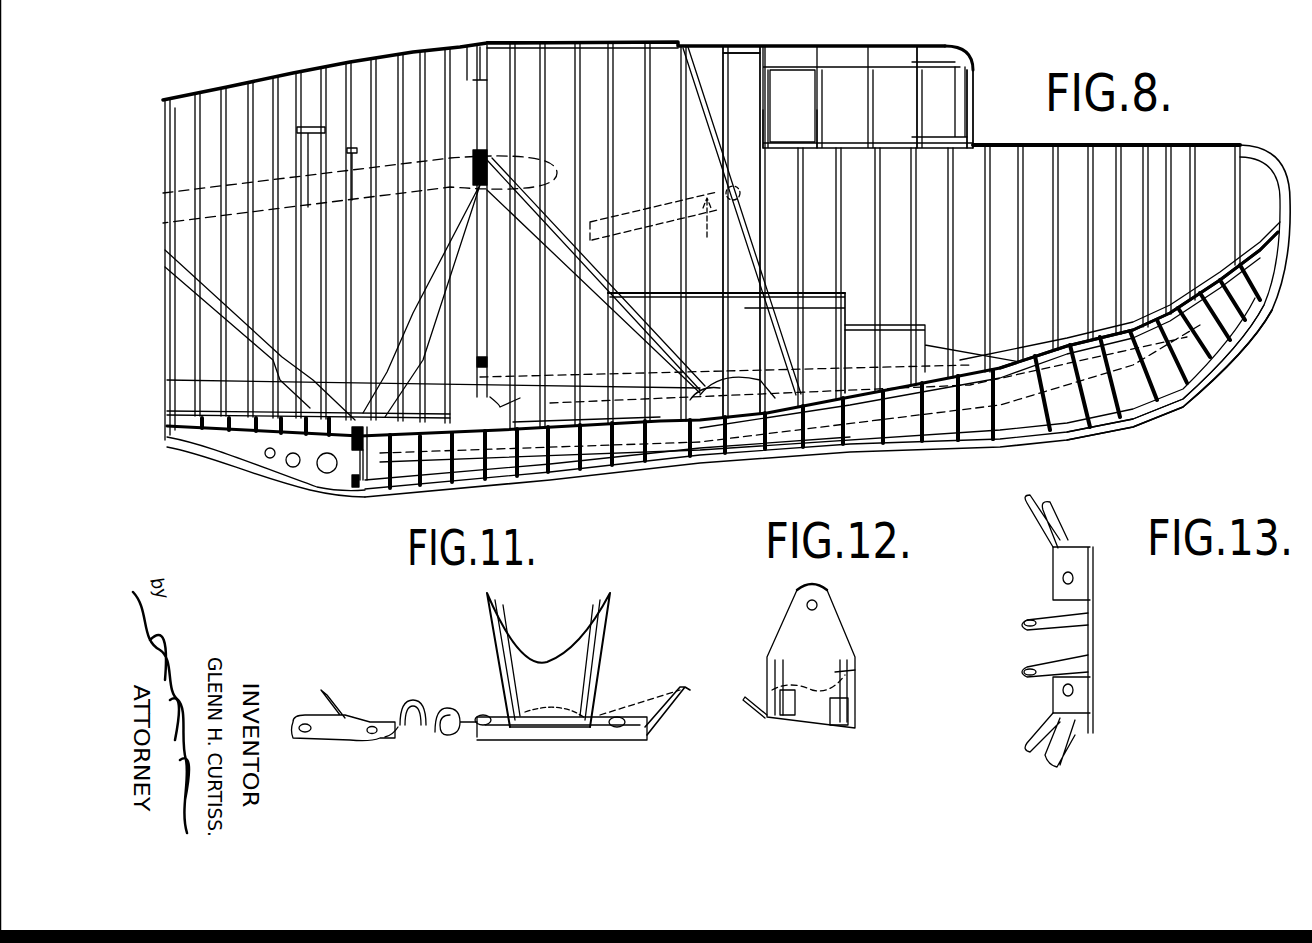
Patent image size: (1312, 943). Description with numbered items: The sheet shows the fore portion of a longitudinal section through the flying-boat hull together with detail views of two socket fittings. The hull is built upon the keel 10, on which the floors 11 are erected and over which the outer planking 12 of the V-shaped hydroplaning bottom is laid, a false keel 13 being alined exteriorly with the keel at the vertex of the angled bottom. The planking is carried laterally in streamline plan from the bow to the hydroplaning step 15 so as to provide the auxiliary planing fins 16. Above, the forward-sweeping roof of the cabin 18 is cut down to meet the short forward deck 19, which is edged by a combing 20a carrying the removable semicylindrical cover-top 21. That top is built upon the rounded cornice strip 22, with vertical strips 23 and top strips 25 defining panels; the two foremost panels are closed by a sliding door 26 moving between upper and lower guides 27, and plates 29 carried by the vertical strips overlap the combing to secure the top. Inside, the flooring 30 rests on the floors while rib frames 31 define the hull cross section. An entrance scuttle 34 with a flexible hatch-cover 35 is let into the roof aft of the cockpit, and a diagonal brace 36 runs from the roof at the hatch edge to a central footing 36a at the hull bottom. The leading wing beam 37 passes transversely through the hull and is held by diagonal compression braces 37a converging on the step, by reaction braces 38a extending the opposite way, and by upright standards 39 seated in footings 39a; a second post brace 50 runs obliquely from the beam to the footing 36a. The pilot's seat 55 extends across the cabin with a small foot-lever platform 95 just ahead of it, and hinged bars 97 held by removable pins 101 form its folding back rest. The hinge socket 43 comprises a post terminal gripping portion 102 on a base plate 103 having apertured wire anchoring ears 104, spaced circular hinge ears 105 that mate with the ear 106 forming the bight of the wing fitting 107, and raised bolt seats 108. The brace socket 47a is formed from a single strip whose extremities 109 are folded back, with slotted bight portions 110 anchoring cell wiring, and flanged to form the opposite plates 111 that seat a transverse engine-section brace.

In FIG. 8, the keel 10 is at (1100, 426).
In FIG. 8, the floors 11 is at (995, 410).
In FIG. 8, the outer planking 12 is at (1150, 420).
In FIG. 8, the false keel 13 is at (1110, 432).
In FIG. 8, the hydroplaning step 15 is at (360, 460).
In FIG. 8, the auxiliary planing fins 16 is at (720, 372).
In FIG. 8, the cabin 18 is at (740, 232).
In FIG. 8, the forward deck 19 is at (1185, 145).
In FIG. 8, the combing 20a is at (823, 160).
In FIG. 8, the removable cover-top 21 is at (792, 106).
In FIG. 8, the cornice strip 22 is at (968, 52).
In FIG. 8, the vertical strips 23 is at (917, 86).
In FIG. 8, the top strips 25 is at (818, 47).
In FIG. 8, the sliding door 26 is at (975, 82).
In FIG. 8, the upper and lower guides 27 is at (912, 135).
In FIG. 8, the plates 29 is at (815, 133).
In FIG. 8, the flooring 30 is at (1078, 343).
In FIG. 8, the rib frames 31 is at (1090, 220).
In FIG. 8, the entrance scuttle 34 is at (586, 48).
In FIG. 8, the hatch-cover 35 is at (625, 44).
In FIG. 8, the brace 36 is at (705, 133).
In FIG. 8, the central footing 36a is at (752, 440).
In FIG. 8, the wing beam 37 is at (470, 158).
In FIG. 8, the diagonal compression braces 37a is at (190, 290).
In FIG. 8, the reaction braces 38a is at (548, 255).
In FIG. 8, the upright standards 39 is at (484, 300).
In FIG. 8, the footings 39a is at (500, 405).
In FIG. 8, the second post brace 50 is at (610, 290).
In FIG. 8, the pilot's seat 55 is at (785, 293).
In FIG. 8, the platform 95 is at (955, 350).
In FIG. 8, the bars 97 is at (640, 215).
In FIG. 8, the removable pins 101 is at (705, 233).
In FIG. 11, the post terminal gripping portion 102 is at (512, 642).
In FIG. 12, the post terminal gripping portion 102 is at (835, 628).
In FIG. 11, the socket fitting 43 is at (603, 655).
In FIG. 12, the socket fitting 43 is at (811, 659).
In FIG. 11, the base plate 103 is at (595, 738).
In FIG. 11, the apertured wire anchoring ears 104 is at (680, 688).
In FIG. 12, the apertured wire anchoring ears 104 is at (857, 672).
In FIG. 11, the spaced circular hinge ears 105 is at (445, 740).
In FIG. 12, the spaced circular hinge ears 105 is at (850, 712).
In FIG. 11, the ear 106 is at (415, 702).
In FIG. 11, the wing fitting 107 is at (340, 740).
In FIG. 11, the raised bolt seats 108 is at (482, 712).
In FIG. 13, the extremities 109 is at (1078, 585).
In FIG. 13, the slotted bight portions 110 is at (1052, 512).
In FIG. 13, the opposite plates 111 is at (1050, 618).
In FIG. 13, the seating socket 47a is at (1093, 633).